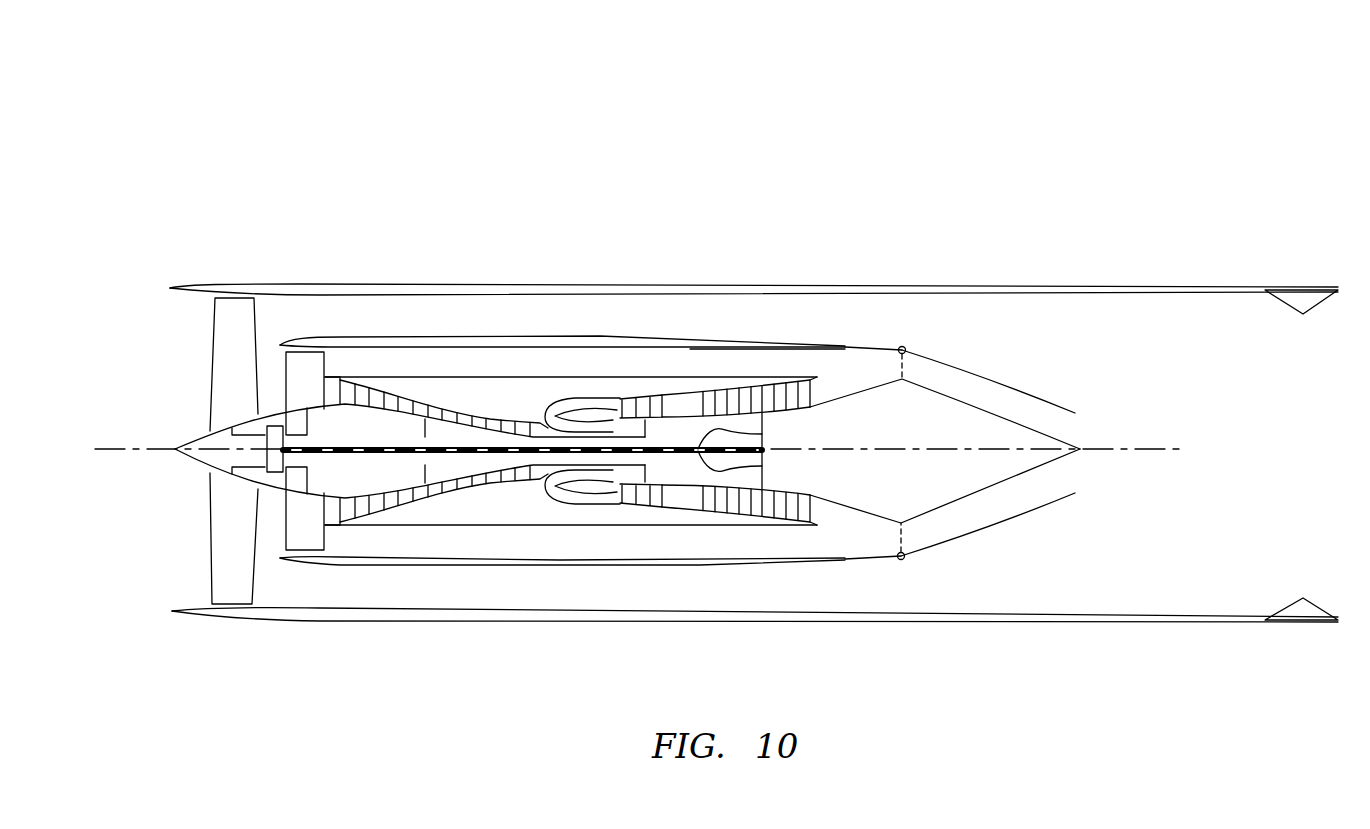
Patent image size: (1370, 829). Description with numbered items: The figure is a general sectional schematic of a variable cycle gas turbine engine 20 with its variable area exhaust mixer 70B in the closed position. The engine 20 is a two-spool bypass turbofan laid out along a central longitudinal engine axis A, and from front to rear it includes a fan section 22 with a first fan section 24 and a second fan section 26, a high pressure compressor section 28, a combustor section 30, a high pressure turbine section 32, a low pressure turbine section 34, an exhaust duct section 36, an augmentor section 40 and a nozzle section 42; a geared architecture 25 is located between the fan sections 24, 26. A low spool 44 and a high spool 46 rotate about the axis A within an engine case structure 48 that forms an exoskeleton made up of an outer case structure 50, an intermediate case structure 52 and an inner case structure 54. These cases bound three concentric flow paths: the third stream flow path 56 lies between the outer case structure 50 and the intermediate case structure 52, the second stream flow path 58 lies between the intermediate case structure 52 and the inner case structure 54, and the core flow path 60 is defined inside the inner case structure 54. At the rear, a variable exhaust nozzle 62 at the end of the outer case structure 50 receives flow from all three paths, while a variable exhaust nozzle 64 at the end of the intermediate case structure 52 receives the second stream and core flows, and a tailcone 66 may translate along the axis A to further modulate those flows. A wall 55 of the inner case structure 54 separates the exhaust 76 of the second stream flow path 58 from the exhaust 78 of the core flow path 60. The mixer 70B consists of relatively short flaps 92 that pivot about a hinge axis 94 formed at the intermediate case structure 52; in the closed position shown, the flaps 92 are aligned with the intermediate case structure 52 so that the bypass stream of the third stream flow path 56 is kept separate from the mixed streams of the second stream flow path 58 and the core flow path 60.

The gas turbine engine 20 is at (822, 126).
The fan section 22 is at (333, 132).
The first fan section 24 is at (205, 200).
The second fan section 26 is at (335, 200).
The high pressure compressor section 28 is at (550, 200).
The combustor section 30 is at (571, 329).
The high pressure turbine section 32 is at (677, 200).
The low pressure turbine section 34 is at (818, 200).
The exhaust duct section 36 is at (961, 411).
The augmentor section 40 is at (1190, 200).
The nozzle section 42 is at (1190, 200).
The geared architecture 25 is at (277, 443).
The low spool 44 is at (762, 434).
The high spool 46 is at (451, 463).
The engine case structure 48 is at (398, 632).
The outer case structure 50 is at (568, 284).
The intermediate case structure 52 is at (626, 338).
The inner case structure 54 is at (683, 379).
The wall 55 is at (817, 377).
The third stream flow path 56 is at (462, 326).
The second stream flow path 58 is at (474, 369).
The core flow path 60 is at (500, 423).
The variable exhaust nozzle 62 is at (1303, 315).
The variable exhaust nozzle 64 is at (1023, 385).
The tailcone 66 is at (969, 441).
The variable area exhaust mixer 70B is at (874, 340).
The exhaust 76 is at (807, 543).
The exhaust 78 is at (823, 517).
The flaps 92 is at (883, 560).
The hinge axis 94 is at (901, 558).
The central longitudinal engine axis A is at (128, 445).